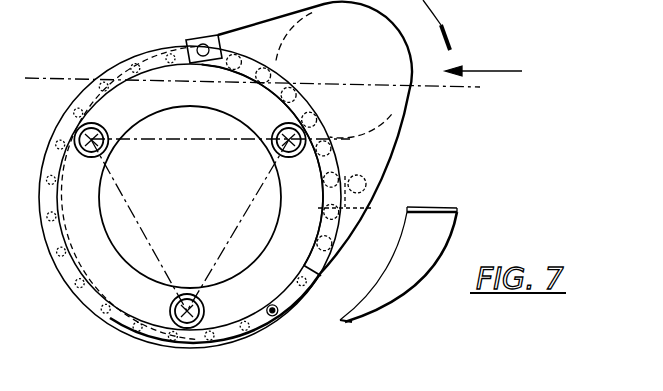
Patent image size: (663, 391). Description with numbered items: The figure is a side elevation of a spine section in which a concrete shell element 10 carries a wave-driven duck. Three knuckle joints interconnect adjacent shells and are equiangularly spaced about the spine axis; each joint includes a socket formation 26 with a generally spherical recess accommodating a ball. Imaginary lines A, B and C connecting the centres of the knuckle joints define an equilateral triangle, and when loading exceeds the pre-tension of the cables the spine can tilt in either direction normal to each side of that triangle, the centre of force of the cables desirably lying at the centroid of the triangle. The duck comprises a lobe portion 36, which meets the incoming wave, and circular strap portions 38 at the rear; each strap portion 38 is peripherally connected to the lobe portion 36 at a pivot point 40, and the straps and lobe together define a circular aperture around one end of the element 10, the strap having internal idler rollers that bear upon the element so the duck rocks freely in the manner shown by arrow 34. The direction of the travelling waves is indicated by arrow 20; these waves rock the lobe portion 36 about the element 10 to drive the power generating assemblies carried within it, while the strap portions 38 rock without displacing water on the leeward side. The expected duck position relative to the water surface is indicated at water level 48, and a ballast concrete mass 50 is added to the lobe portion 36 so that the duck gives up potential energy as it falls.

The shell 10 is at (93, 272).
The arrow 20 is at (497, 71).
The socket formation 26 is at (400, 138).
The arrow 34 is at (447, 26).
The lobe portion 36 is at (387, 95).
The strap portion 38 is at (57, 135).
The pivot point 40 is at (274, 314).
The water level 48 is at (70, 77).
The ballast concrete mass 50 is at (440, 230).
The imaginary line A is at (160, 124).
The imaginary line B is at (137, 222).
The imaginary line C is at (226, 247).